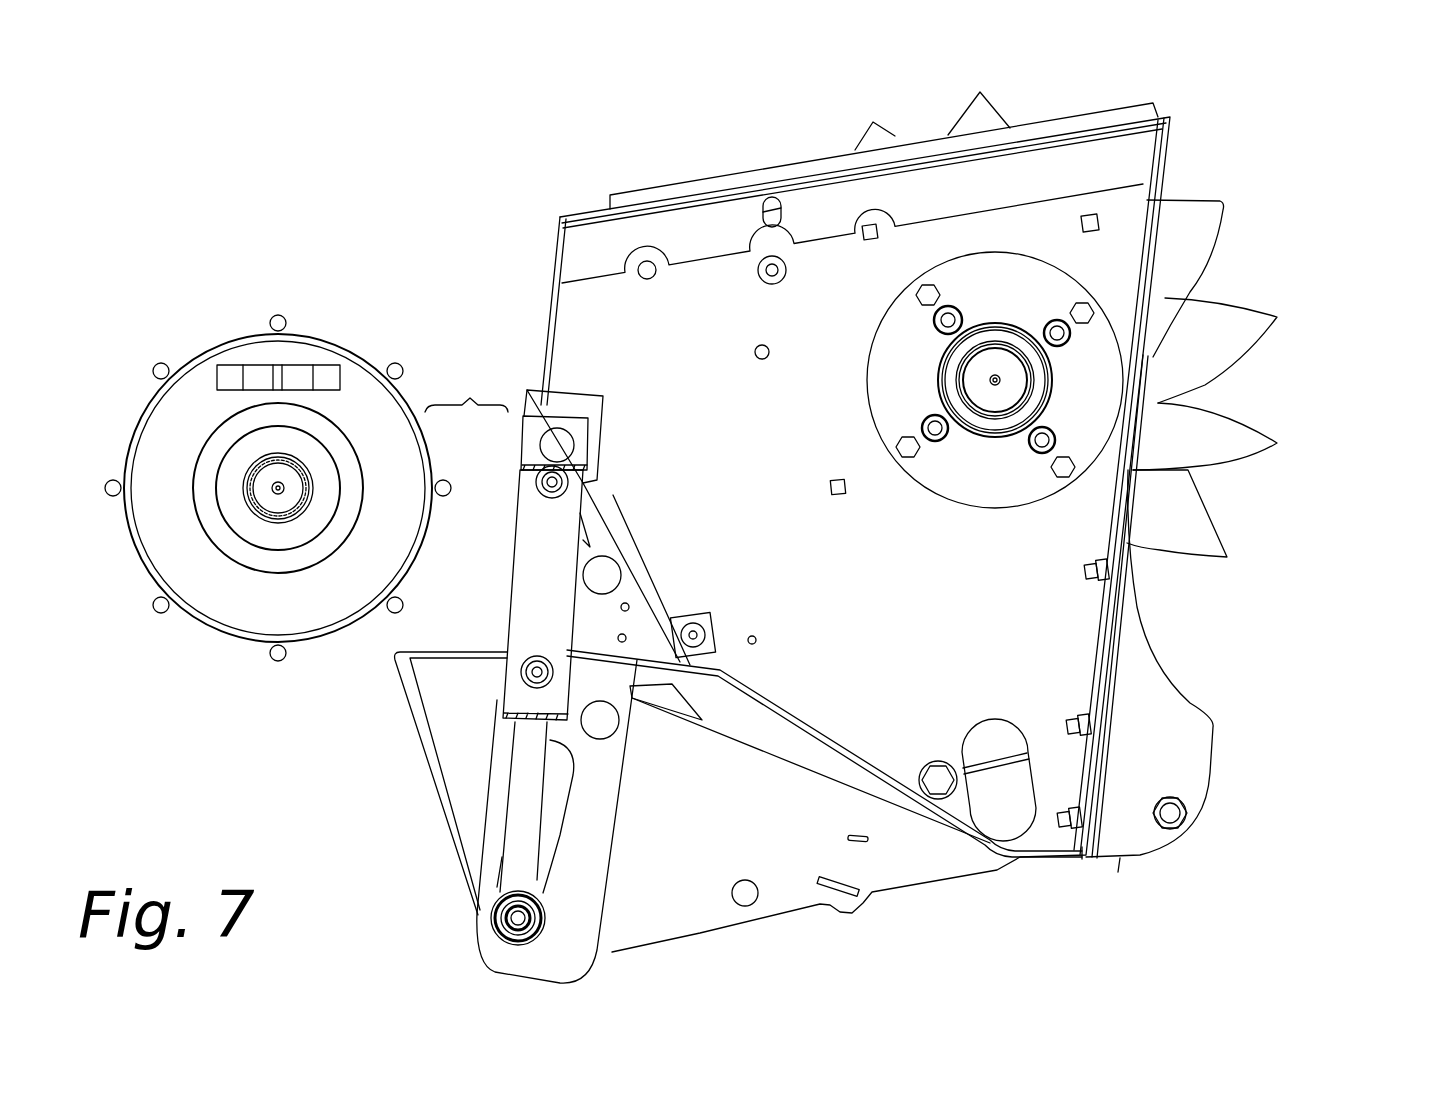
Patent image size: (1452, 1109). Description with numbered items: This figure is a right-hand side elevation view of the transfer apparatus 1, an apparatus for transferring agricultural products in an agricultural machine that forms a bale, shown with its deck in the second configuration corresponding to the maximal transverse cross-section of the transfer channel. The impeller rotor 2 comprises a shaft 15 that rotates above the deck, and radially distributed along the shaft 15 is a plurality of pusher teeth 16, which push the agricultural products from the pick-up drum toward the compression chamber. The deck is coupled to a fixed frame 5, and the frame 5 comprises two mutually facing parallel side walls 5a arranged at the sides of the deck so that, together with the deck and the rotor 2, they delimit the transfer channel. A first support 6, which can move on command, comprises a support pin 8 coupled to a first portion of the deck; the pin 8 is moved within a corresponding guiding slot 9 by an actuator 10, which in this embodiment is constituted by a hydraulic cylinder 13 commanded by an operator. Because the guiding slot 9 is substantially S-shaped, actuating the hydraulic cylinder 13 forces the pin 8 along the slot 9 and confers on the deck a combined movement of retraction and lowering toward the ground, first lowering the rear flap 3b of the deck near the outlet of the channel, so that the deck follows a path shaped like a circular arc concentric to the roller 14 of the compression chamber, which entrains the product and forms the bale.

The transfer apparatus 1 is at (1362, 187).
The impeller rotor 2 is at (1262, 280).
The rear flap 3b is at (448, 660).
The fixed frame 5 is at (863, 708).
The side wall 5a is at (1078, 628).
The first support 6 is at (478, 908).
The support pin 8 is at (490, 928).
The guiding slot 9 is at (553, 828).
The actuator 10 is at (508, 665).
The hydraulic cylinder 13 is at (560, 535).
The roller 14 is at (157, 312).
The shaft 15 is at (897, 385).
The pusher teeth 16 is at (770, 127).